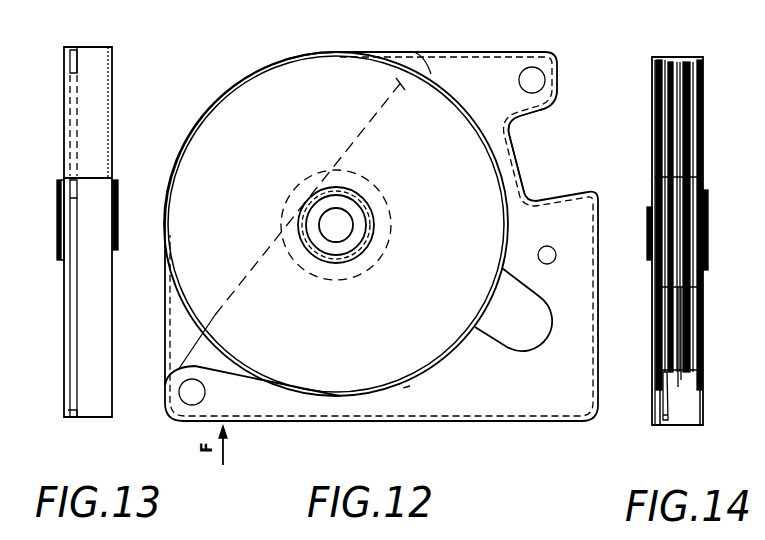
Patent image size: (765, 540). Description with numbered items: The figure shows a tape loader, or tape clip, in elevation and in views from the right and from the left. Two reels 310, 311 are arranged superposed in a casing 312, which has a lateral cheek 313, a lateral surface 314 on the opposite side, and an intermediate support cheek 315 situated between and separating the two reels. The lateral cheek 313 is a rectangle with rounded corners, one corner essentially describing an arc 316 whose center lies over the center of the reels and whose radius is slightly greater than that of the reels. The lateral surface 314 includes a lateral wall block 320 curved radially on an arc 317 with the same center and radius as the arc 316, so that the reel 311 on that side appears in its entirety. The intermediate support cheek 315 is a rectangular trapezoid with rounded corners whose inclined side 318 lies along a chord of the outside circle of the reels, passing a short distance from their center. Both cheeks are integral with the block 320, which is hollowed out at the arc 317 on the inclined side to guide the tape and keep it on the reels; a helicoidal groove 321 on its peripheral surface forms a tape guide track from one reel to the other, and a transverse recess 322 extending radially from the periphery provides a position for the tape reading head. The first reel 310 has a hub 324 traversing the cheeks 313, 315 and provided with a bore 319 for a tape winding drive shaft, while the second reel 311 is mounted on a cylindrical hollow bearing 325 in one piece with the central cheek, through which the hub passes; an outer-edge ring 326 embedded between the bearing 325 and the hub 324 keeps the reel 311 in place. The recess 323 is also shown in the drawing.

In FIG. 14, the reel 310 is at (660, 60).
In FIG. 12, the reel 311 is at (263, 90).
In FIG. 14, the reel 311 is at (703, 77).
In FIG. 12, the casing 312 is at (447, 50).
In FIG. 12, the lateral cheek 313 is at (180, 323).
In FIG. 13, the lateral cheek 313 is at (112, 122).
In FIG. 14, the lateral cheek 313 is at (655, 173).
In FIG. 12, the lateral surface 314 is at (540, 400).
In FIG. 12, the intermediate support cheek 315 is at (190, 349).
In FIG. 14, the intermediate support cheek 315 is at (678, 387).
In FIG. 12, the arc 316 is at (207, 102).
In FIG. 12, the arc 317 is at (403, 388).
In FIG. 12, the inclined side 318 is at (400, 82).
In FIG. 12, the bore 319 is at (333, 232).
In FIG. 13, the lateral wall block 320 is at (92, 46).
In FIG. 14, the lateral wall block 320 is at (702, 405).
In FIG. 12, the helicoidal groove 321 is at (505, 53).
In FIG. 13, the helicoidal groove 321 is at (73, 340).
In FIG. 14, the helicoidal groove 321 is at (648, 247).
In FIG. 12, the recess 322 is at (517, 157).
In FIG. 12, the lobe 323 is at (510, 333).
In FIG. 12, the hub 324 is at (355, 218).
In FIG. 14, the hub 324 is at (709, 212).
In FIG. 12, the cylindrical hollow bearing 325 is at (310, 196).
In FIG. 12, the outer-edge ring 326 is at (360, 192).
In FIG. 14, the outer-edge ring 326 is at (707, 195).